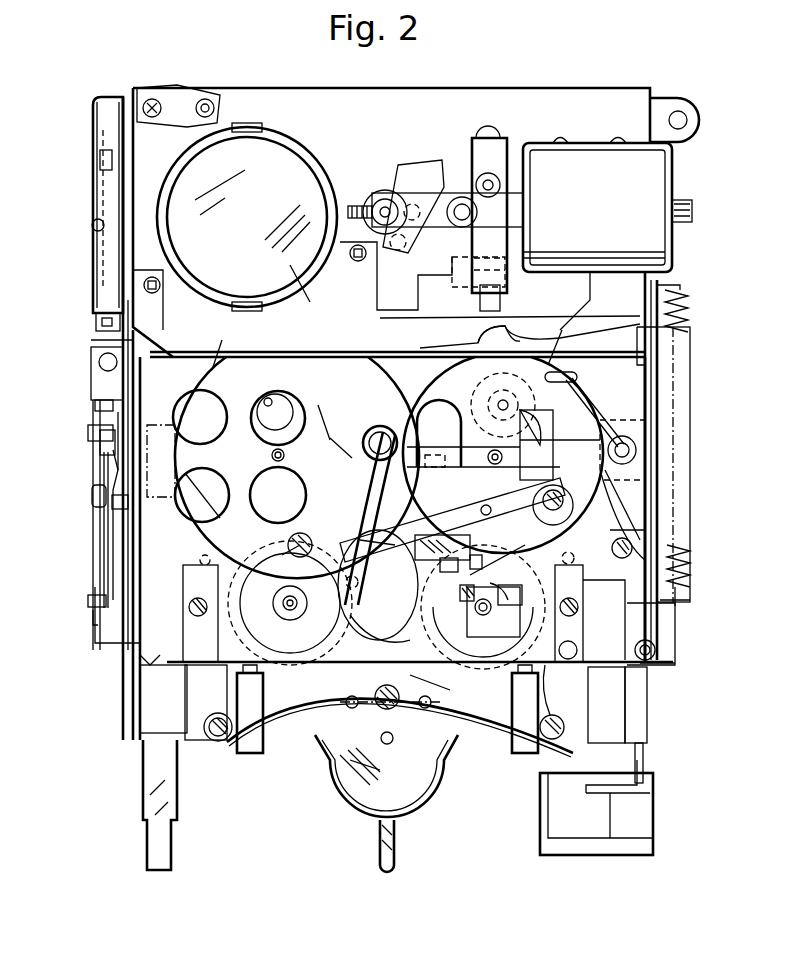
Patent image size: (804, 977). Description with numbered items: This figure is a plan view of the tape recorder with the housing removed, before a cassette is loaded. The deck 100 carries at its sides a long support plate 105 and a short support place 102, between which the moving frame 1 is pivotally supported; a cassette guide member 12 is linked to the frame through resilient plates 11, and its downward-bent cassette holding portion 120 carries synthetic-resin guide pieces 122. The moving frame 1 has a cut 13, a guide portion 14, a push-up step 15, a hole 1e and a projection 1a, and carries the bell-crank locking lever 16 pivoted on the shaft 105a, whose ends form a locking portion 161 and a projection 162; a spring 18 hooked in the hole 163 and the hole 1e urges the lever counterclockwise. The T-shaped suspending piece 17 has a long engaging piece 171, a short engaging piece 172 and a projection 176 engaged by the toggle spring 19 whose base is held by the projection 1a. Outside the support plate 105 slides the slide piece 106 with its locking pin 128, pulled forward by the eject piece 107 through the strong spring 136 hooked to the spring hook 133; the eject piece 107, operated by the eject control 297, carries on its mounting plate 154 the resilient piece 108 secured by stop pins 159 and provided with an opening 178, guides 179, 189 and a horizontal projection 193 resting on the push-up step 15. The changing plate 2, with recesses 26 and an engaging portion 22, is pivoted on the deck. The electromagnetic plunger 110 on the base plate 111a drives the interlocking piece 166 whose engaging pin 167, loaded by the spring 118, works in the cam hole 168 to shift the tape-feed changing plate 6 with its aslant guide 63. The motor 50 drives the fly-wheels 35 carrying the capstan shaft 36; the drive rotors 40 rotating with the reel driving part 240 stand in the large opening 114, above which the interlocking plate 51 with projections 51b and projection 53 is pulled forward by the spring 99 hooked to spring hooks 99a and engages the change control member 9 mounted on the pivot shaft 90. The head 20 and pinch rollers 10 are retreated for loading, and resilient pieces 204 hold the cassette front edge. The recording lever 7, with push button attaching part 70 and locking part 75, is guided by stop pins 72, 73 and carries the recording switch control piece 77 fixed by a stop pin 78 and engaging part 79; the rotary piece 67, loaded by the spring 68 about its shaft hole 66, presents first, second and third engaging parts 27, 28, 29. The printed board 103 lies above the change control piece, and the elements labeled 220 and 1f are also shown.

The deck 100 is at (436, 103).
The side bar 220 is at (98, 228).
The stop pin 73 is at (98, 297).
The support place 102 is at (128, 342).
The recording switch control piece 77 is at (100, 356).
The stop pin 78 is at (117, 370).
The engaging part 79 is at (100, 405).
The tape-feed changing plate 6 is at (90, 430).
The aslant guide 63 is at (110, 436).
The stop pin 72 is at (92, 492).
The rotary piece 67 is at (106, 522).
The recording lever 7 is at (96, 542).
The spring 68 is at (115, 558).
The shaft hole 66 is at (125, 502).
The first engaging part 27 is at (505, 242).
The locking part 75 is at (92, 616).
The motor 50 is at (288, 152).
The printed board 103 is at (284, 274).
The spring 118 is at (370, 205).
The interlocking piece 166 is at (450, 203).
The engaging pin 167 is at (385, 205).
The cam hole 168 is at (408, 195).
The second engaging part 28 is at (502, 186).
The third engaging part 29 is at (503, 318).
The recesses 26 is at (482, 332).
The electromagnetic plunger 110 is at (652, 176).
The base plate 111a is at (588, 140).
The changing plate 2 is at (590, 300).
The spring hook 133 is at (684, 290).
The engaging portion 22 is at (688, 320).
The support plate 105 is at (652, 345).
The slide piece 106 is at (652, 372).
The spring 136 is at (690, 398).
The shaft 105a is at (636, 450).
The locking lever 16 is at (632, 496).
The locking pin 128 is at (632, 544).
The locking portion 161 is at (640, 557).
The fly-wheels 35 is at (392, 340).
The moving frame 1 is at (404, 372).
The pinch roller 10 is at (292, 398).
The cut 13 is at (330, 411).
The spring 19 is at (326, 439).
The recording and reproducing head 20 is at (400, 372).
The engaging piece 171 is at (350, 500).
The projection 162 is at (420, 462).
The hole 1e is at (565, 376).
The spring 18 is at (592, 405).
The hole 163 is at (556, 436).
The suspending piece 17 is at (505, 500).
The pivot 1f is at (562, 512).
The guide 179 is at (440, 532).
The guide 189 is at (430, 532).
The opening 178 is at (484, 537).
The push-up step 15 is at (507, 550).
The capstan shaft 36 is at (270, 455).
The guide portion 14 is at (240, 495).
The projection 1a is at (288, 540).
The reel driving part 240 is at (280, 600).
The projection 176 is at (368, 585).
The engaging piece 172 is at (365, 628).
The opening 114 is at (462, 588).
The horizontal projection 193 is at (515, 587).
The resilient plates 11 is at (188, 590).
The drive rotors 40 is at (243, 606).
The guide pieces 122 is at (146, 656).
The stop pins 159 is at (656, 650).
The mounting plate 154 is at (676, 668).
The resilient piece 108 is at (563, 691).
The cassette holding portion 120 is at (163, 692).
The cassette guide member 12 is at (222, 660).
The eject piece 107 is at (645, 758).
The eject control 297 is at (640, 822).
The interlocking plate 51 is at (450, 686).
The projections 51b is at (330, 700).
The projection 53 is at (398, 708).
The pivot shaft 90 is at (387, 746).
The change control member 9 is at (408, 812).
The resilient piece 204 is at (258, 752).
The spring hooks 99a is at (220, 745).
The spring 99 is at (500, 735).
The push button attaching part 70 is at (170, 838).